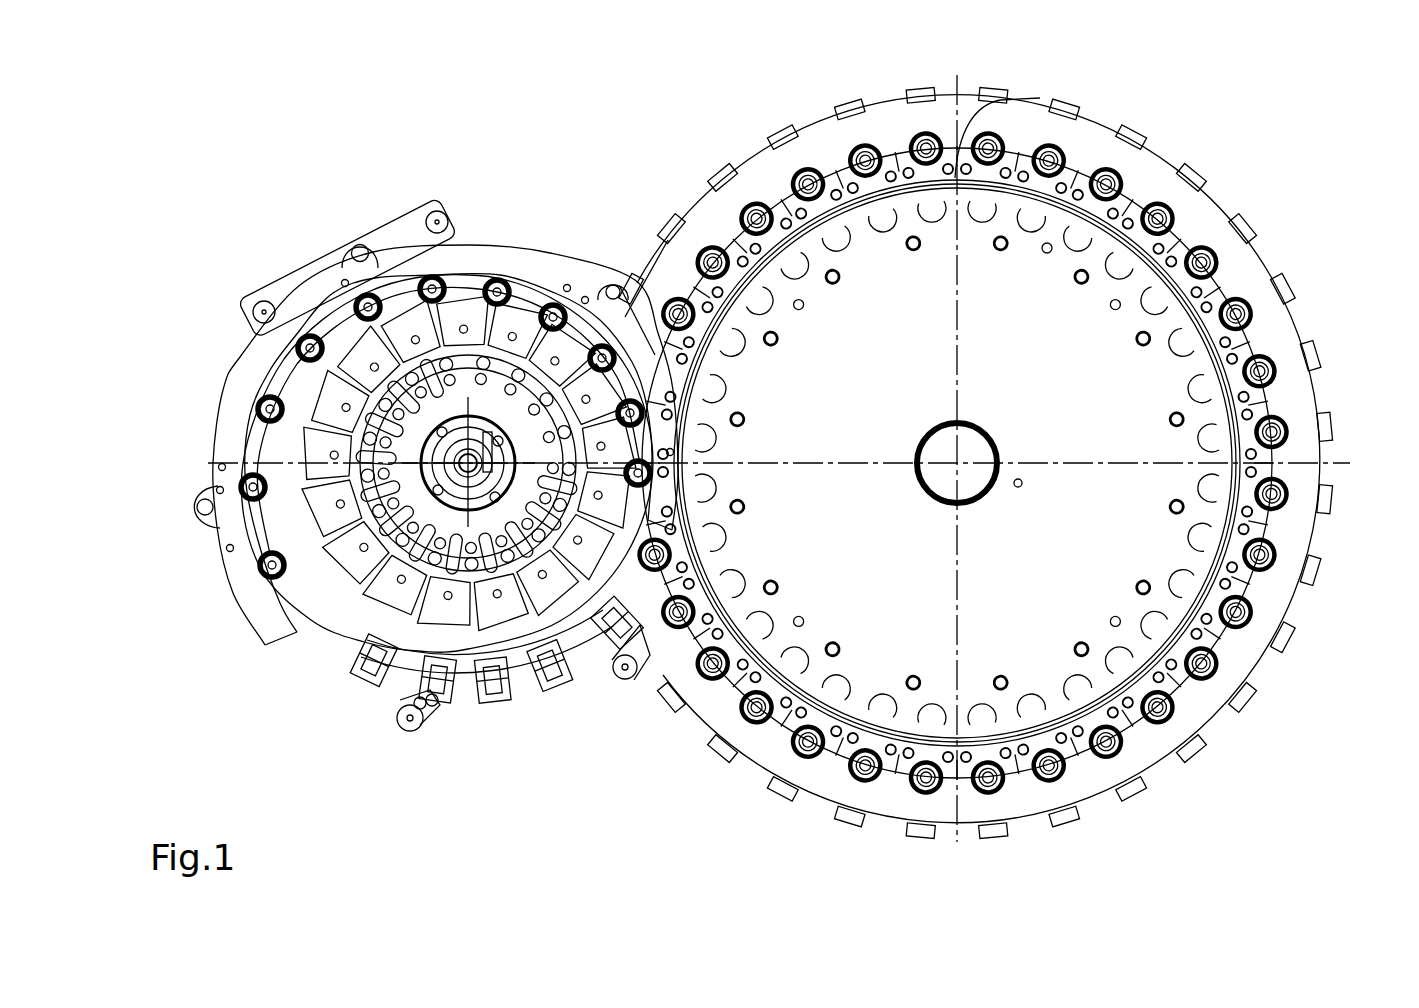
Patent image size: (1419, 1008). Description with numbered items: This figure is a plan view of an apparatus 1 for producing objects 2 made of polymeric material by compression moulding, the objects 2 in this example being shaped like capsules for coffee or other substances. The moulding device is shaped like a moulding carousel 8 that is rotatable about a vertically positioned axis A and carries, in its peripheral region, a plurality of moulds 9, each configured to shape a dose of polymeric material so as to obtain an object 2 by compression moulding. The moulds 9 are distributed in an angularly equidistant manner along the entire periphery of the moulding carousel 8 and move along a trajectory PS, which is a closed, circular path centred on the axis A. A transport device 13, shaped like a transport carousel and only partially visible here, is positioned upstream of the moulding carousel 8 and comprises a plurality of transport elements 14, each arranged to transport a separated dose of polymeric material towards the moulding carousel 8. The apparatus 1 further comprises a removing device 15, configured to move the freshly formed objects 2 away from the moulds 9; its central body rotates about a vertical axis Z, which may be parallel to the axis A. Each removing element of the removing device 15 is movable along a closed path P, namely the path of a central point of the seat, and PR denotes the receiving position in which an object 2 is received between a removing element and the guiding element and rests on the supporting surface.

The apparatus 1 is at (280, 125).
The objects 2 is at (432, 280).
The axis Z is at (470, 440).
The removing device 15 is at (550, 243).
The closed path P is at (268, 362).
The trajectory PS is at (978, 135).
The moulds 9 is at (1242, 312).
The moulding carousel 8 is at (1240, 660).
The receiving position PR is at (692, 521).
The axis A is at (957, 463).
The transport elements 14 is at (396, 690).
The transport device 13 is at (526, 704).